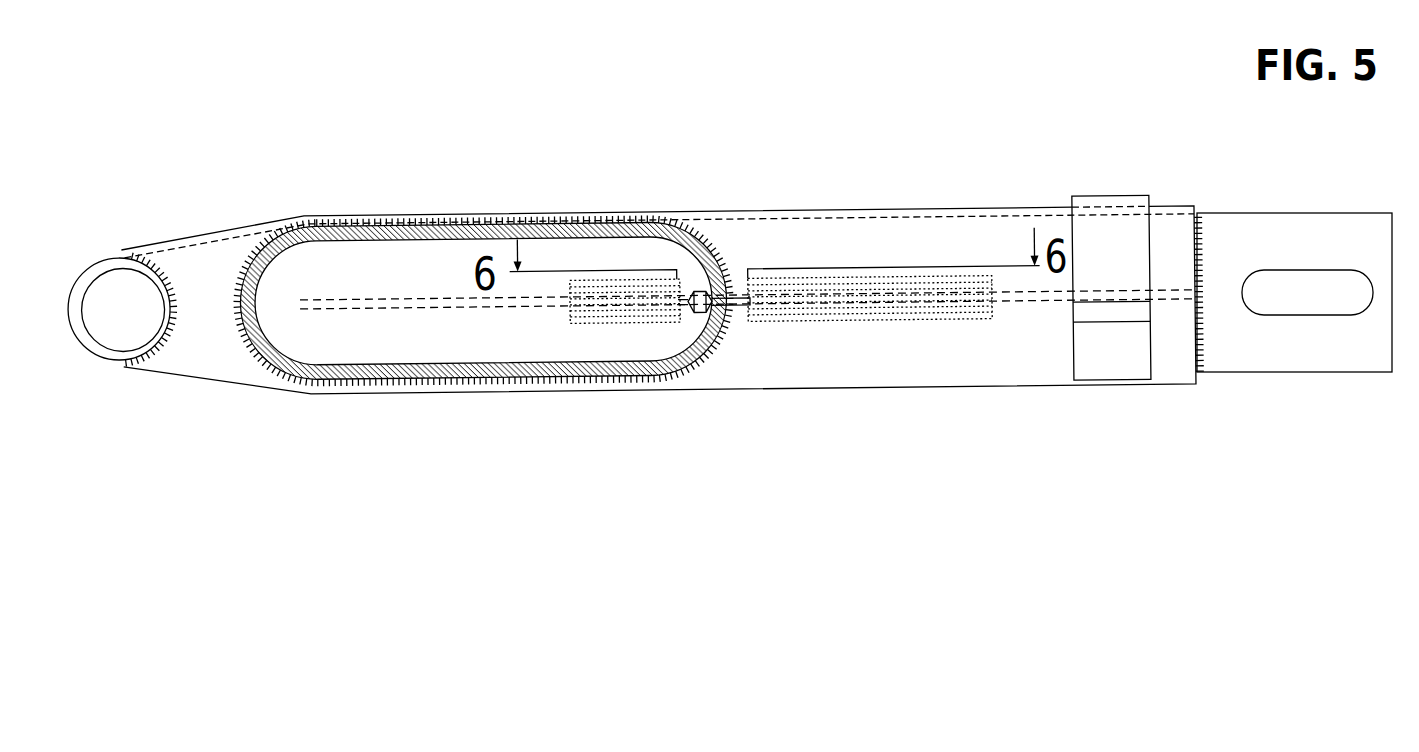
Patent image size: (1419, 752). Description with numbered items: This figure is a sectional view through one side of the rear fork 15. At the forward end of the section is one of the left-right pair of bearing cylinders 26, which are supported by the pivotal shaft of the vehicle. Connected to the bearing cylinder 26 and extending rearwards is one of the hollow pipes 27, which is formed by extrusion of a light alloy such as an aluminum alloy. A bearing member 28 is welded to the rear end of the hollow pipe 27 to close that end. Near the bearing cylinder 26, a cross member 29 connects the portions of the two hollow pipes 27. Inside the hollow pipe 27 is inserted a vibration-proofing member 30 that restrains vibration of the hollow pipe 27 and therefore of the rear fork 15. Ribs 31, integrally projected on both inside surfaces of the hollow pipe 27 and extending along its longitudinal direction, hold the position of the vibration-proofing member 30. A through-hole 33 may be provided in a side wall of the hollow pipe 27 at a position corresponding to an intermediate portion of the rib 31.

The rear fork 15 is at (222, 216).
The bearing cylinder 26 is at (113, 355).
The hollow pipe 27 is at (855, 227).
The bearing member 28 is at (1345, 227).
The cross member 29 is at (473, 372).
The vibration-proofing member 30 is at (790, 332).
The rib 31 is at (1040, 300).
The through-hole 33 is at (703, 323).